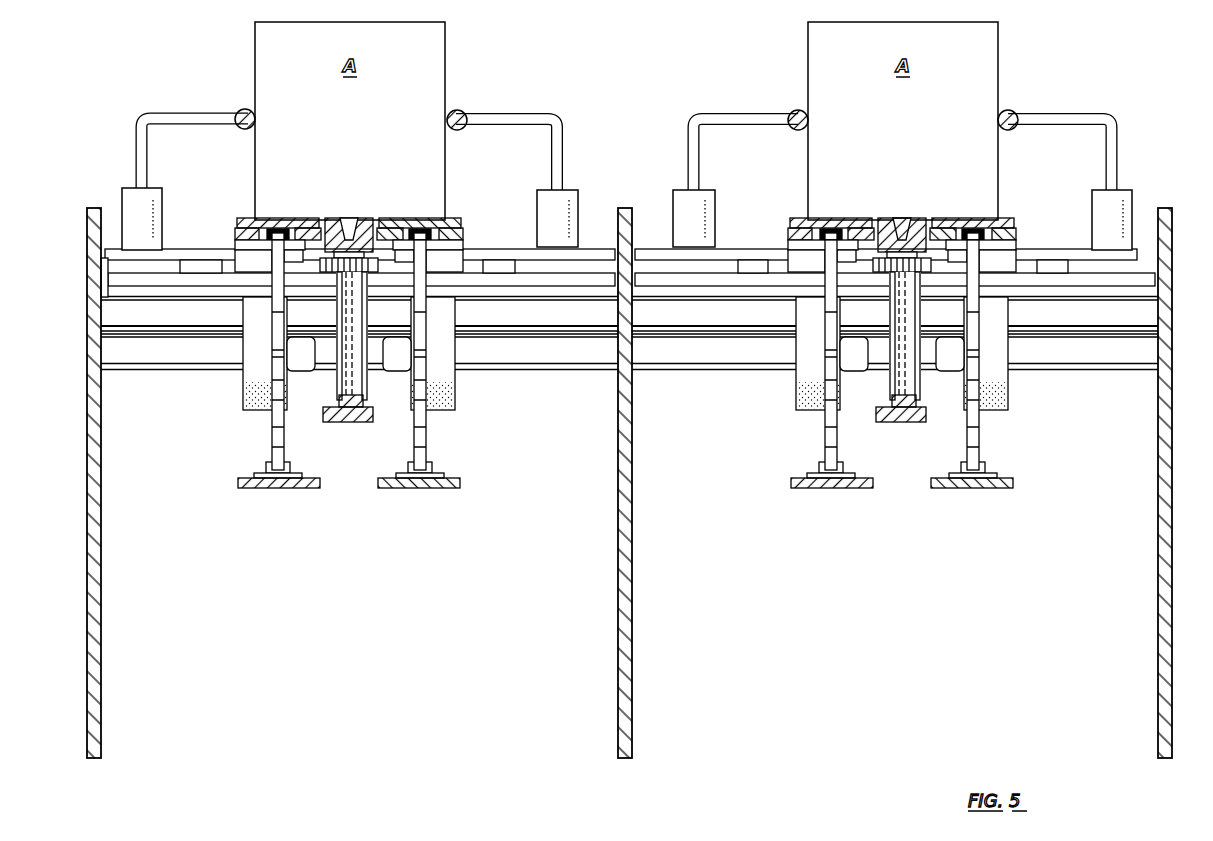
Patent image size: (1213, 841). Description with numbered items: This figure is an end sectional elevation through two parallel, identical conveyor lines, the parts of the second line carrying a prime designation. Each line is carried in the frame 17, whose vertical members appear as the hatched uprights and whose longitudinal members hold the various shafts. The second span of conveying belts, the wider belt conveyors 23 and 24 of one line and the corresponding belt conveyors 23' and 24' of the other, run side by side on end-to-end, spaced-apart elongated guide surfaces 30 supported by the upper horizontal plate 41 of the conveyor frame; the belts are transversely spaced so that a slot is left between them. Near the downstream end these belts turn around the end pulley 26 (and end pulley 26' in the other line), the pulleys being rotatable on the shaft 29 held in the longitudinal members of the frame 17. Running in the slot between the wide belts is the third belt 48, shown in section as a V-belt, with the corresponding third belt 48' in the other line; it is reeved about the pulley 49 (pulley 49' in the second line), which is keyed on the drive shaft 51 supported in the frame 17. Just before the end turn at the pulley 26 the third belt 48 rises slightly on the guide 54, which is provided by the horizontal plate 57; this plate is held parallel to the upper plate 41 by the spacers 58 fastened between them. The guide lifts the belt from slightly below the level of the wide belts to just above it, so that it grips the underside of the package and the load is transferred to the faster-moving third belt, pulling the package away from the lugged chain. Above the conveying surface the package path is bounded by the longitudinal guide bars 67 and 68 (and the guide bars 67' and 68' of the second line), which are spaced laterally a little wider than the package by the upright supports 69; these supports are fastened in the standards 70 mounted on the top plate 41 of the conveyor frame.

The frame 17 is at (96, 598).
The belt conveyor 23 is at (831, 353).
The belt conveyor 23' is at (278, 337).
The belt conveyor 24 is at (973, 353).
The belt conveyor 24' is at (420, 337).
The end pulley 26 is at (908, 355).
The end pulley 26' is at (349, 355).
The shaft 29 is at (538, 355).
The guide surface 30 is at (788, 230).
The upper horizontal plate 41 is at (198, 250).
The third belt 48 is at (902, 325).
The third belt 48' is at (349, 304).
The pulley 49 is at (880, 339).
The pulley 49' is at (326, 339).
The drive shaft 51 is at (534, 325).
The guide 54 is at (873, 245).
The horizontal plate 57 is at (230, 278).
The spacer 58 is at (194, 262).
The longitudinal guide bar 67 is at (1020, 102).
The longitudinal guide bar 67' is at (472, 102).
The longitudinal guide bar 68 is at (785, 101).
The longitudinal guide bar 68' is at (231, 101).
The upright support 69 is at (136, 117).
The standard 70 is at (131, 230).